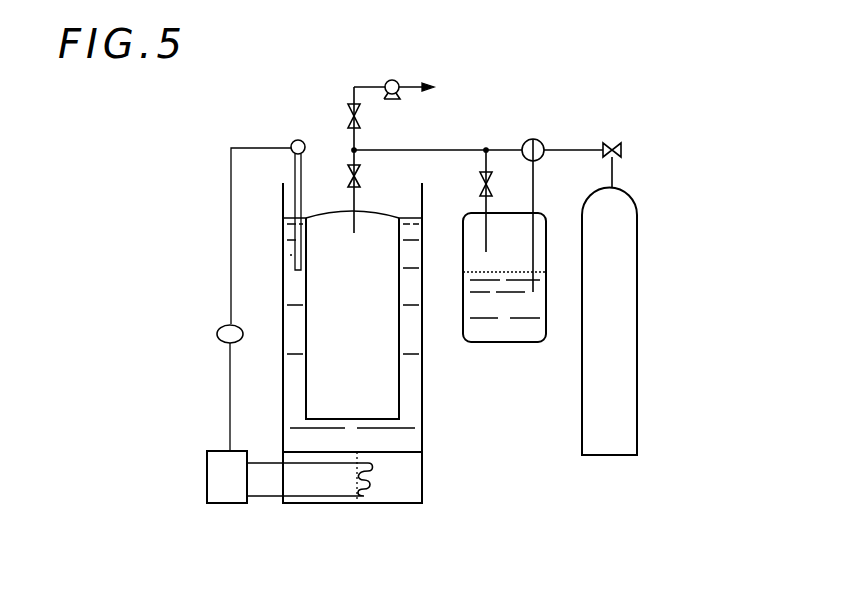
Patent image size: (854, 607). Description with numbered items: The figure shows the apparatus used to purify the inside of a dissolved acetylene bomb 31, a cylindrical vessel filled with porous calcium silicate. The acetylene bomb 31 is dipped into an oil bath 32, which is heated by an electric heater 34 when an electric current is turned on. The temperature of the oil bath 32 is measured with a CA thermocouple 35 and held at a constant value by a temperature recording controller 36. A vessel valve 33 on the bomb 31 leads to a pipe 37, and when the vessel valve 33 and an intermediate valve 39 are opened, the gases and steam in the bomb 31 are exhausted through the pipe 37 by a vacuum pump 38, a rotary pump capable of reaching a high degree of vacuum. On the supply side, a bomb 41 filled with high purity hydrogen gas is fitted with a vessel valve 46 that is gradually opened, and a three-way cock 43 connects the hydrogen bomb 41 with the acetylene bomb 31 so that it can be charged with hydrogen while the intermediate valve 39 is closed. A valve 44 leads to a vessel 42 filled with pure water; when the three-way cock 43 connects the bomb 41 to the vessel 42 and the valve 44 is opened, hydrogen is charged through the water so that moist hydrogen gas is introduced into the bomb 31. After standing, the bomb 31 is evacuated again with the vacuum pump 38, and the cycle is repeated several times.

The dissolved acetylene bomb 31 is at (399, 388).
The oil bath 32 is at (422, 443).
The vessel valve 33 is at (350, 165).
The electric heater 34 is at (225, 503).
The CA thermocouple 35 is at (292, 141).
The temperature recording controller 36 is at (218, 326).
The pipe 37 is at (356, 138).
The vacuum pump 38 is at (395, 80).
The intermediate valve 39 is at (352, 103).
The bomb 41 is at (616, 456).
The vessel 42 is at (531, 343).
The three-way cock 43 is at (541, 141).
The valve 44 is at (480, 182).
The vessel valve 46 is at (619, 146).